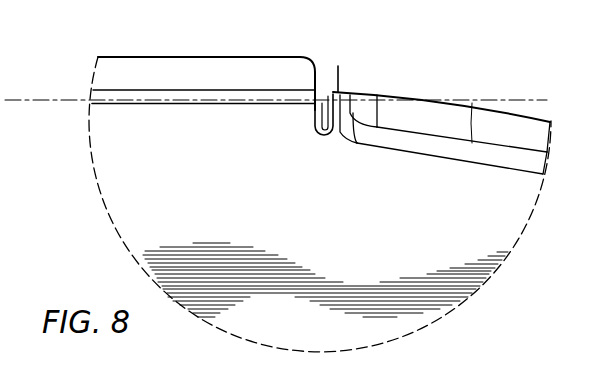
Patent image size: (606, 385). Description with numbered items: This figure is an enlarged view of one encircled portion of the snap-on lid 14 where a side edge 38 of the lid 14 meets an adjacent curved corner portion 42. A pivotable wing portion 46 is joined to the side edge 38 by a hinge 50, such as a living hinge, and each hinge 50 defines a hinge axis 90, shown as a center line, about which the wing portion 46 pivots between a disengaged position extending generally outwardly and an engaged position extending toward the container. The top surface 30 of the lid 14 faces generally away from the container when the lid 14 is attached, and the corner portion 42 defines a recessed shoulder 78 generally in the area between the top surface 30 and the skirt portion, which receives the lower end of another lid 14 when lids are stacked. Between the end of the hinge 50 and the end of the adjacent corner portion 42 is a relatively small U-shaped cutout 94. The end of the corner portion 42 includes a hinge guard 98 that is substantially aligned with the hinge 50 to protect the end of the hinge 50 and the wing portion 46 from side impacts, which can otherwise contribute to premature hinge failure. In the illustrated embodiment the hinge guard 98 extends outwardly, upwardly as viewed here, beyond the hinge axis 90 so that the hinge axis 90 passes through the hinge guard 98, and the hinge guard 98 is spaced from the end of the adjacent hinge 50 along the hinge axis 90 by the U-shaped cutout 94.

The snap-on lid 14 is at (455, 228).
The top surface 30 is at (348, 253).
The side edges 38 is at (117, 104).
The curved corner portions 42 is at (500, 190).
The pivotable wing portion 46 is at (130, 68).
The hinge 50 is at (162, 104).
The recessed shoulder 78 is at (511, 130).
The hinge axis 90 is at (67, 101).
The U-shaped cutout 94 is at (320, 119).
The hinge guard 98 is at (338, 66).